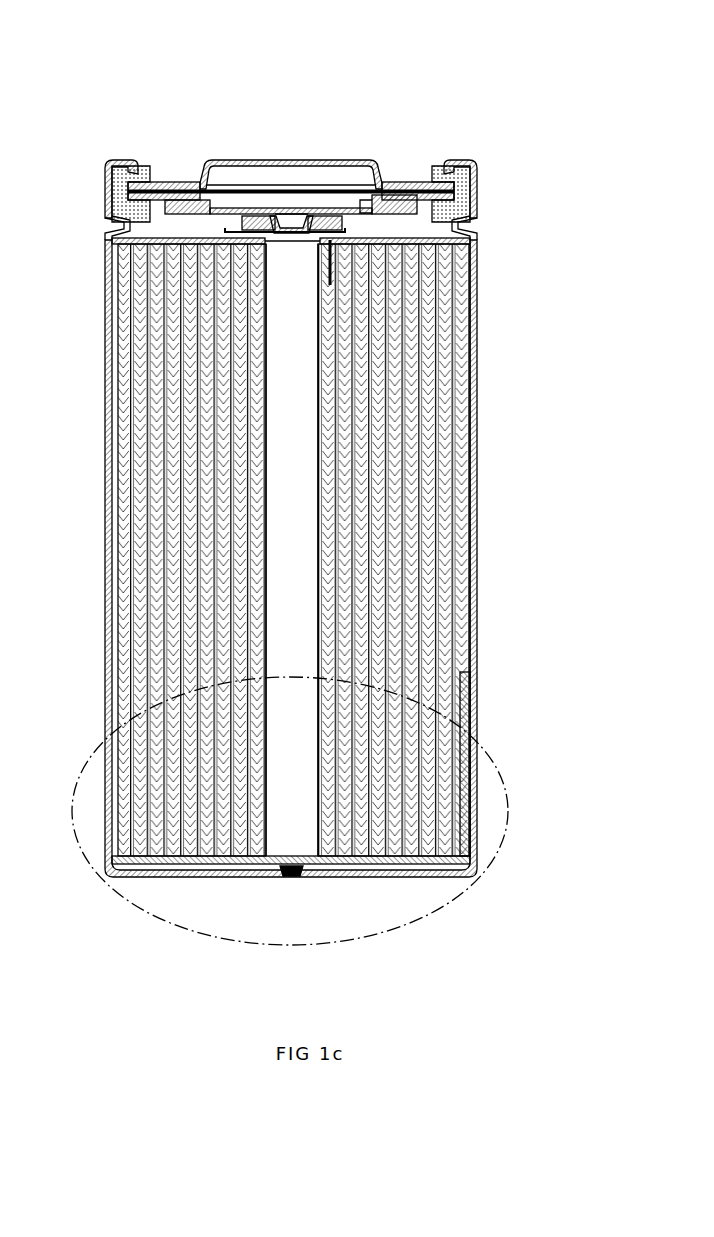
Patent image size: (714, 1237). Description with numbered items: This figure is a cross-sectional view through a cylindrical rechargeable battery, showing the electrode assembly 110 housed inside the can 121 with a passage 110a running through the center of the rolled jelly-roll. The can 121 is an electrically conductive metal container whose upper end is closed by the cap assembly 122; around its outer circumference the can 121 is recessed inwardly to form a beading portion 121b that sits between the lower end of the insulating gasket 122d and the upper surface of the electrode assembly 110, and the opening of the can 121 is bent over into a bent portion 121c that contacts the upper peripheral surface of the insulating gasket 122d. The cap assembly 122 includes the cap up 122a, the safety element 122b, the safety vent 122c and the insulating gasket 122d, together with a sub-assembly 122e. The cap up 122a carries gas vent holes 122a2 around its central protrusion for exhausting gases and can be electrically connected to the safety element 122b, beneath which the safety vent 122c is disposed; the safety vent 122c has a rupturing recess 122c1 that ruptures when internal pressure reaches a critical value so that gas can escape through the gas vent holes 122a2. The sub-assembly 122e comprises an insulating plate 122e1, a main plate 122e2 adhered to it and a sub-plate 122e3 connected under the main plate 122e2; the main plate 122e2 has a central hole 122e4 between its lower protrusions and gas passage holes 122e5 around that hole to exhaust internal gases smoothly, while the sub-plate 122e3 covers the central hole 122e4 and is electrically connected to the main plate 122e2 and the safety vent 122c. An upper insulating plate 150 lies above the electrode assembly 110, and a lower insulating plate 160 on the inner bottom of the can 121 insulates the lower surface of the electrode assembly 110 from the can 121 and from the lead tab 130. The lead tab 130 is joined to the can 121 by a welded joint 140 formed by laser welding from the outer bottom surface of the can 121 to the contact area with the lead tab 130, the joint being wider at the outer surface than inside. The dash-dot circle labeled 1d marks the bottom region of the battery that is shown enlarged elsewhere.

The electrode assembly 110 is at (343, 550).
The passage 110a is at (295, 582).
The can 121 is at (478, 410).
The beading portion 121b is at (482, 228).
The bent portion 121c is at (470, 162).
The cap assembly 122 is at (85, 45).
The cap up 122a is at (285, 123).
The gas vent holes 122a2 is at (211, 160).
The safety element 122b is at (138, 182).
The safety vent 122c is at (422, 146).
The rupturing recess 122c1 is at (360, 212).
The insulating gasket 122d is at (117, 160).
The sub-assembly 122e is at (178, 86).
The insulating plate 122e1 is at (168, 200).
The main plate 122e2 is at (220, 210).
The sub-plate 122e3 is at (330, 212).
The central hole 122e4 is at (307, 212).
The gas passage holes 122e5 is at (238, 220).
The lead tab 130 is at (343, 877).
The welded joint 140 is at (287, 877).
The upper insulating plate 150 is at (478, 248).
The lower insulating plate 160 is at (460, 877).
The enlarged region indicator 1d is at (507, 813).